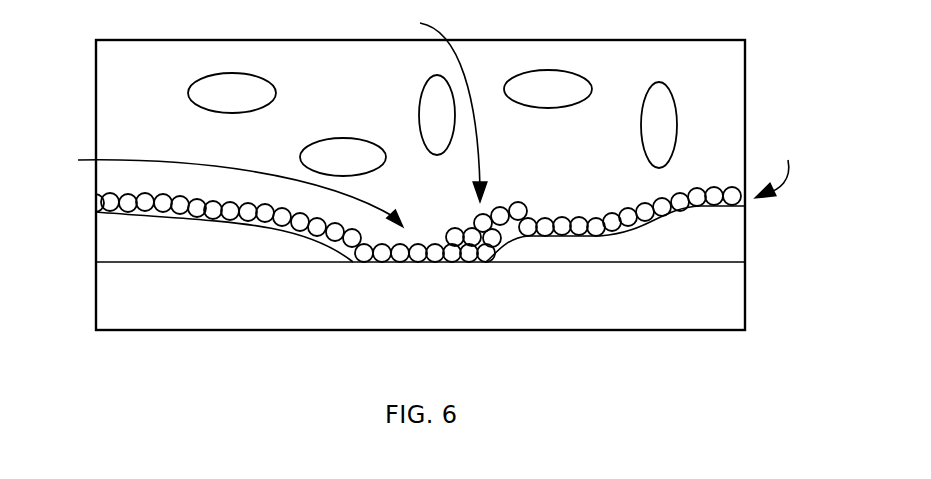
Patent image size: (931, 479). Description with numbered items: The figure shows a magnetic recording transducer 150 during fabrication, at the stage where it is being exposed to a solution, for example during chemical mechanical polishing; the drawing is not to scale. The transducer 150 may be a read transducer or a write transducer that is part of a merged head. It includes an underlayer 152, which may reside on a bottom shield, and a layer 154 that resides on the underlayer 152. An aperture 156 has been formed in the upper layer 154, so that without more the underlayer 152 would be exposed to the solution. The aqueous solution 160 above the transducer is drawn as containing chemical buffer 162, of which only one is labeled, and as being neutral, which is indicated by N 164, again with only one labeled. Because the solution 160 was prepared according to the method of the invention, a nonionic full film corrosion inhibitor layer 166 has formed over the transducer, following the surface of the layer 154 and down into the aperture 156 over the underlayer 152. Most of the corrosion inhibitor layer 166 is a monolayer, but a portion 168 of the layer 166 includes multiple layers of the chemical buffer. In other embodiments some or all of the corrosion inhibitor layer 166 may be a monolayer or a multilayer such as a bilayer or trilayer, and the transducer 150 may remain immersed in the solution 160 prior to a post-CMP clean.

The magnetic recording transducer 150 is at (778, 210).
The underlayer 152 is at (96, 290).
The layer 154 is at (96, 238).
The aperture 156 is at (213, 187).
The solution 160 is at (745, 91).
The chemical buffer 162 is at (188, 92).
The N 164 is at (678, 122).
The nonionic full film corrosion inhibitor layer 166 is at (782, 166).
The portion 168 is at (427, 107).